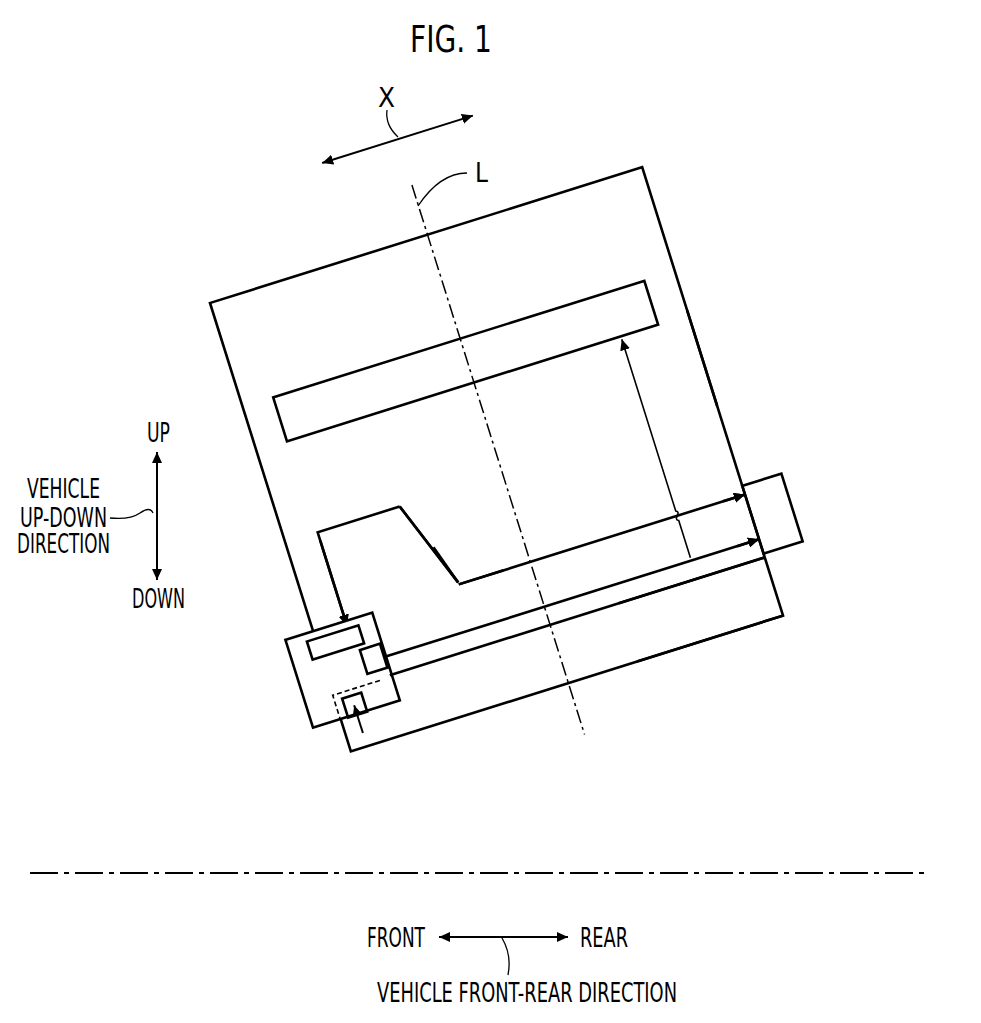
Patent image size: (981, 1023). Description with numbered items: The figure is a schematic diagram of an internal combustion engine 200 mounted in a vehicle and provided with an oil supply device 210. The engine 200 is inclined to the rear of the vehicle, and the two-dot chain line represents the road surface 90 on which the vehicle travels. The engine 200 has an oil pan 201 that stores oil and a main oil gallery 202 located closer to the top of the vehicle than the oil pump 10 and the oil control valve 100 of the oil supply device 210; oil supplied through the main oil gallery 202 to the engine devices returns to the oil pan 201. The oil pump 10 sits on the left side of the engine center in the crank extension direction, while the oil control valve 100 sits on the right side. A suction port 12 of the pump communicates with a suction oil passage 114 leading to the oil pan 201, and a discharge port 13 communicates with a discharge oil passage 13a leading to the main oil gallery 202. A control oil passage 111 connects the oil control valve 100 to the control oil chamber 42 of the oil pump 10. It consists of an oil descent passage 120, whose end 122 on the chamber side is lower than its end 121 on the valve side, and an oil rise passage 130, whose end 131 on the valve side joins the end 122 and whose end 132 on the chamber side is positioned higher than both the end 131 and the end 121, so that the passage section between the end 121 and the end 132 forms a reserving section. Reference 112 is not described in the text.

The engine 200 is at (607, 176).
The oil pan 201 is at (707, 645).
The main oil gallery 202 is at (508, 322).
The oil supply device 210 is at (784, 437).
The oil control valve 100 is at (797, 503).
The oil rise passage 130 is at (418, 528).
The end of oil rise passage on control oil chamber side 132 is at (400, 507).
The control oil passage 111 is at (352, 522).
The oil descent passage 120 is at (592, 540).
The end of oil descent passage on control oil chamber side 122 is at (460, 582).
The end of oil rise passage on oil control valve side 131 is at (460, 587).
The end of oil descent passage on oil control valve side 121 is at (735, 495).
The tip end of pin 112 is at (757, 553).
The oil pump 10 is at (293, 683).
The control oil chamber 42 is at (305, 646).
The discharge port 13 is at (374, 642).
The discharge oil passage 13a is at (613, 590).
The suction port 12 is at (367, 697).
The suction oil passage 114 is at (342, 732).
The road surface 90 is at (832, 873).